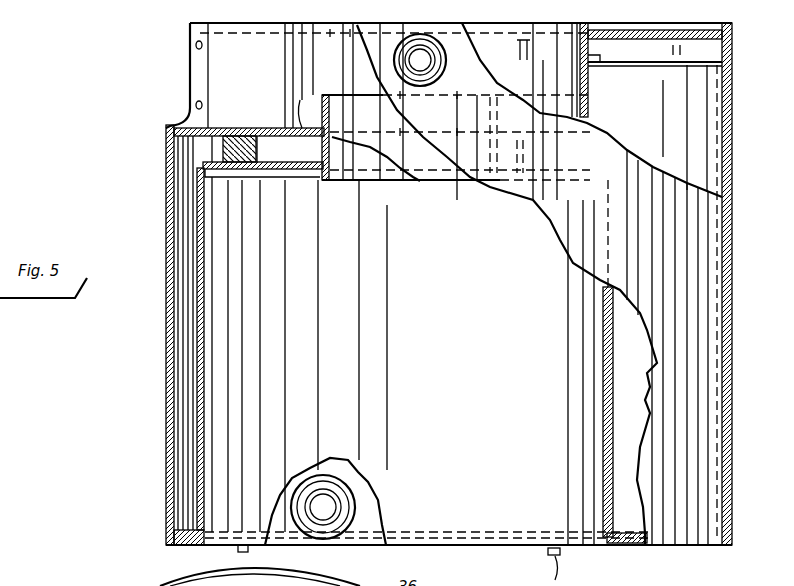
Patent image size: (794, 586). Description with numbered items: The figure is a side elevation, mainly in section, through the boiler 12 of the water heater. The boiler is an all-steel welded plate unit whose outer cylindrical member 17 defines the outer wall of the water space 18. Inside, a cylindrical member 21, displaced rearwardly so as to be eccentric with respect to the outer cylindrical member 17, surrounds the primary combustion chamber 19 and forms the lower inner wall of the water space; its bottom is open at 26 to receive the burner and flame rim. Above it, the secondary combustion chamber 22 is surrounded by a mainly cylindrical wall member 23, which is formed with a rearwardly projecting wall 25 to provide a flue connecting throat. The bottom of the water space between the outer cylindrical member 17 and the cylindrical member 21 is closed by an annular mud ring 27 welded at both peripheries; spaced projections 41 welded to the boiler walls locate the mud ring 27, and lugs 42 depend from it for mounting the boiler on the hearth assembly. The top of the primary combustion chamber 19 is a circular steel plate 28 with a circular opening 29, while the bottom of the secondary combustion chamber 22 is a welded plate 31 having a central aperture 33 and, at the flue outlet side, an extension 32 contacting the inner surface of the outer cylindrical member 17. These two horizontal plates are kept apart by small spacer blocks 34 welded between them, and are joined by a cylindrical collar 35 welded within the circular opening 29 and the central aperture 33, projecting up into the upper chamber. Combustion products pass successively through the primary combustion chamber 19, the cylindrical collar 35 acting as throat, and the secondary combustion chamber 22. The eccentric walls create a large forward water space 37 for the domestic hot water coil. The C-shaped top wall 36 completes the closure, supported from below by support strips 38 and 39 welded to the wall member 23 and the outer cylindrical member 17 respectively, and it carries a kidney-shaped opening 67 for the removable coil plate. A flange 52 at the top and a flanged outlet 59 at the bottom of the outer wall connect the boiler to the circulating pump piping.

The boiler 12 is at (166, 310).
The outer cylindrical member 17 is at (166, 395).
The water space 18 is at (183, 202).
The primary combustion chamber 19 is at (538, 365).
The cylindrical member 21 is at (204, 372).
The secondary combustion chamber 22 is at (340, 80).
The wall member 23 is at (590, 96).
The rearwardly projecting wall 25 is at (218, 62).
The open bottom 26 is at (203, 546).
The mud ring 27 is at (625, 548).
The circular steel plate 28 is at (292, 169).
The circular opening 29 is at (330, 181).
The welded plate 31 is at (302, 105).
The extension 32 is at (224, 129).
The central aperture 33 is at (420, 183).
The spacer blocks 34 is at (258, 148).
The cylindrical collar 35 is at (383, 97).
The top wall 36 is at (585, 28).
The forward water space 37 is at (705, 127).
The support strip 38 is at (593, 58).
The support strip 39 is at (708, 67).
The spaced projections 41 is at (614, 522).
The lugs 42 is at (252, 550).
The flange 52 is at (443, 80).
The flanged outlet 59 is at (368, 473).
The kidney-shaped opening 67 is at (668, 31).